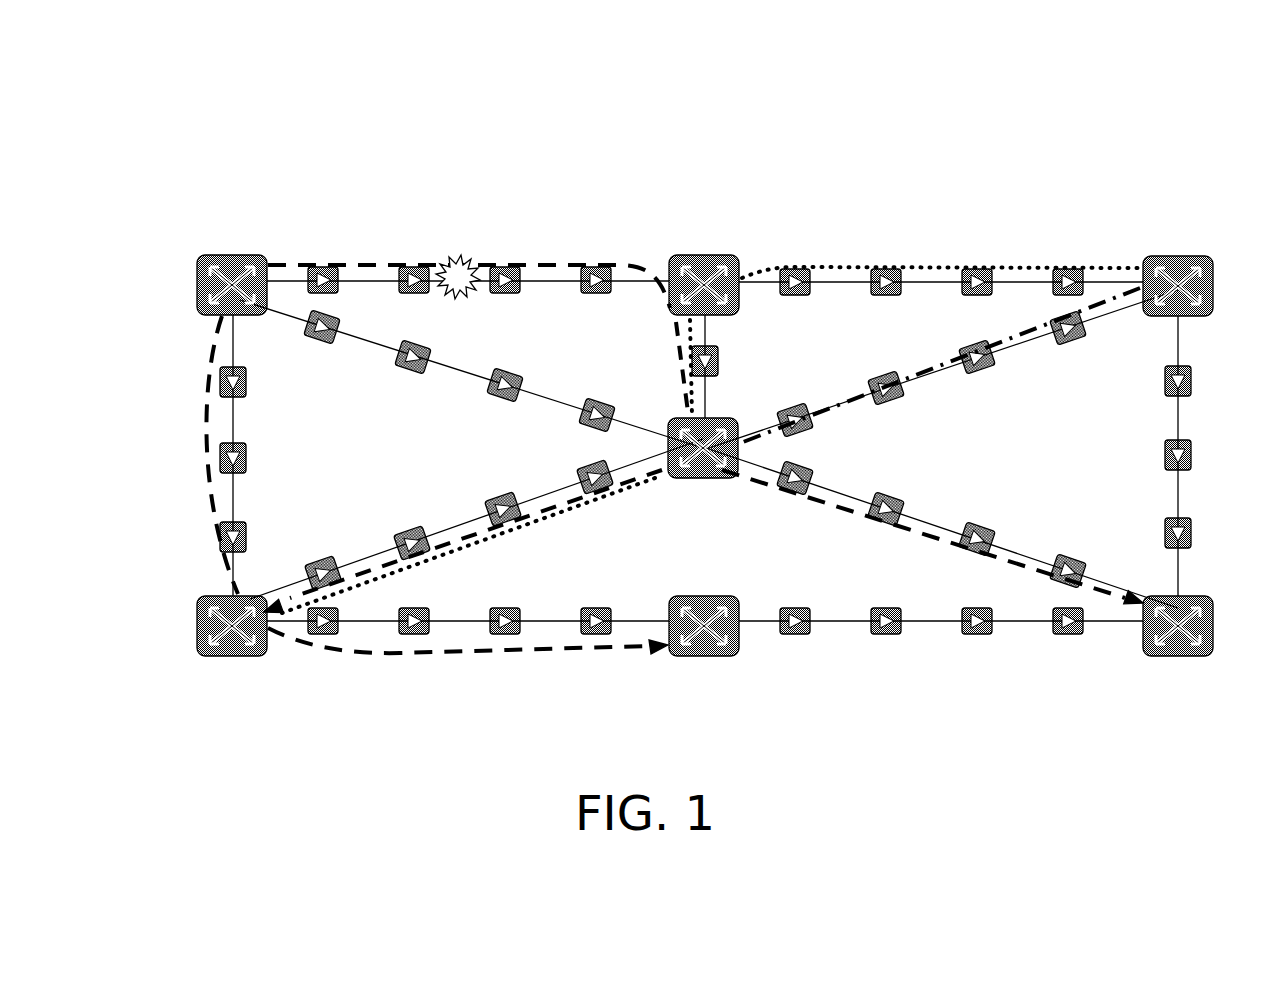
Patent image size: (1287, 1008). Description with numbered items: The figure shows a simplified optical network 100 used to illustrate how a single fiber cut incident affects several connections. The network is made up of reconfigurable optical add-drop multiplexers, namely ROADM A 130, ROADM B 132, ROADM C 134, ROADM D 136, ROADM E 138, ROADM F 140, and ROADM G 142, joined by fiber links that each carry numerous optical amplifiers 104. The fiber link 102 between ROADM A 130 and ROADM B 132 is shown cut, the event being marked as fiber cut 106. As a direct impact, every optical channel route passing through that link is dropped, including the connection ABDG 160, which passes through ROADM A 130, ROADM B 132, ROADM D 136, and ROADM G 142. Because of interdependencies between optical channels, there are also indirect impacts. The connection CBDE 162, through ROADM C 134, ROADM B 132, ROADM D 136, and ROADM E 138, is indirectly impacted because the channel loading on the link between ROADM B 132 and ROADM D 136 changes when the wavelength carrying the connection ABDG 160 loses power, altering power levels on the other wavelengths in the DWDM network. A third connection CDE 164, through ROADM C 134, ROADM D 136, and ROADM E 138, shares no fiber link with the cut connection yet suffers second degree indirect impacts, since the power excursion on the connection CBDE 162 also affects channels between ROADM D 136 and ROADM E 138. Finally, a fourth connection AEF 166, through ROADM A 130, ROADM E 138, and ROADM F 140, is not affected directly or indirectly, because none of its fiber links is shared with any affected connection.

The optical network 100 is at (288, 143).
The fiber link 102 is at (285, 272).
The optical amplifiers 104 is at (597, 268).
The fiber cut 106 is at (460, 268).
The ROADM A 130 is at (222, 262).
The ROADM B 132 is at (727, 262).
The ROADM C 134 is at (1163, 258).
The ROADM D 136 is at (692, 472).
The ROADM E 138 is at (218, 655).
The ROADM F 140 is at (690, 658).
The ROADM G 142 is at (1163, 650).
The connection ABDG 160 is at (558, 268).
The connection CBDE 162 is at (1030, 267).
The connection CDE 164 is at (1030, 330).
The connection AEF 166 is at (408, 660).